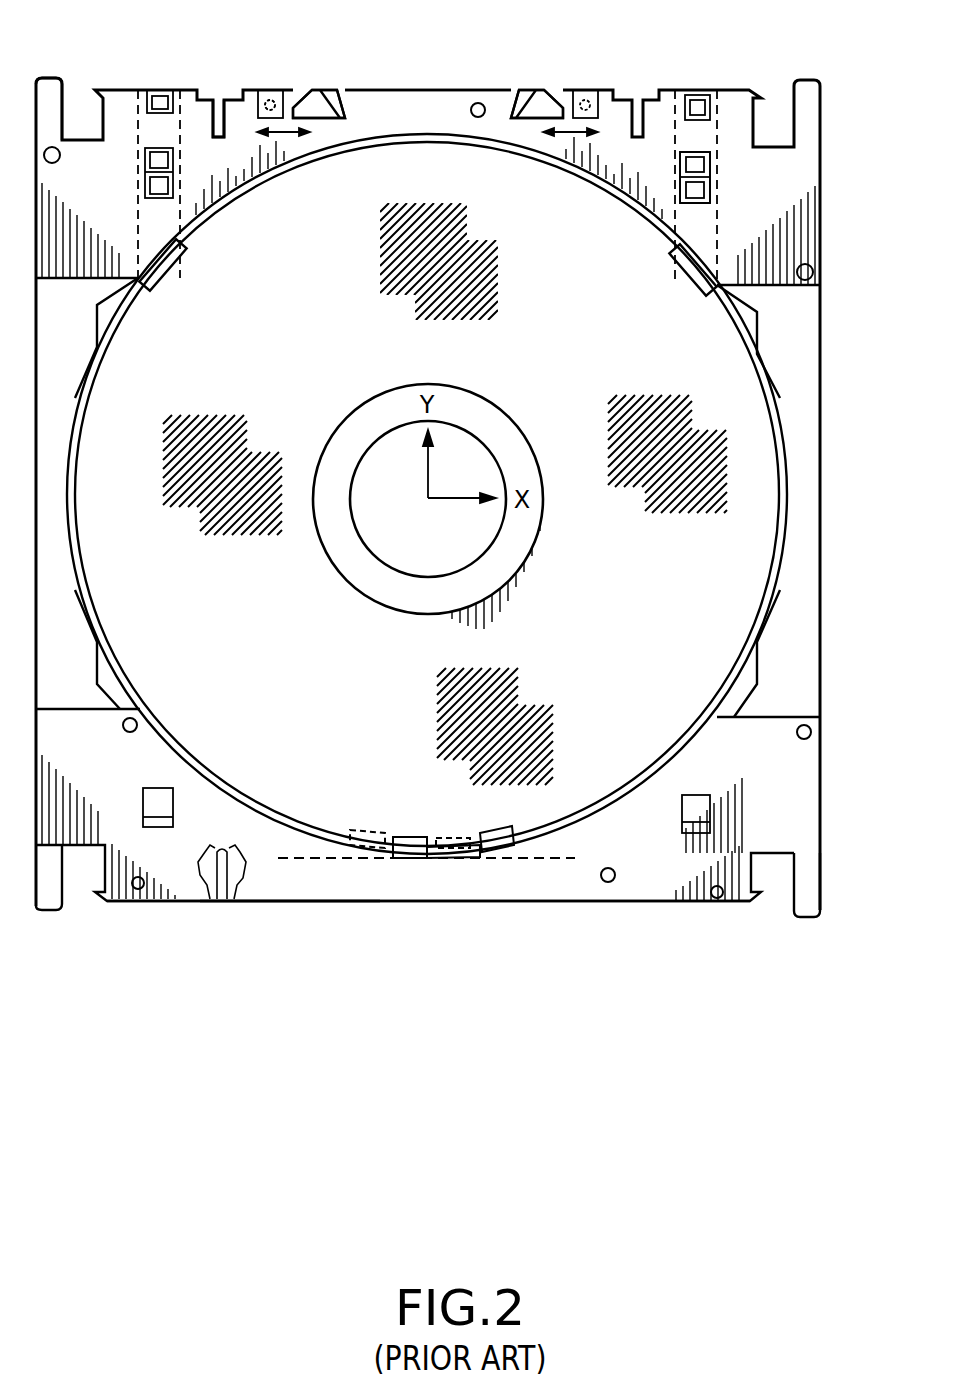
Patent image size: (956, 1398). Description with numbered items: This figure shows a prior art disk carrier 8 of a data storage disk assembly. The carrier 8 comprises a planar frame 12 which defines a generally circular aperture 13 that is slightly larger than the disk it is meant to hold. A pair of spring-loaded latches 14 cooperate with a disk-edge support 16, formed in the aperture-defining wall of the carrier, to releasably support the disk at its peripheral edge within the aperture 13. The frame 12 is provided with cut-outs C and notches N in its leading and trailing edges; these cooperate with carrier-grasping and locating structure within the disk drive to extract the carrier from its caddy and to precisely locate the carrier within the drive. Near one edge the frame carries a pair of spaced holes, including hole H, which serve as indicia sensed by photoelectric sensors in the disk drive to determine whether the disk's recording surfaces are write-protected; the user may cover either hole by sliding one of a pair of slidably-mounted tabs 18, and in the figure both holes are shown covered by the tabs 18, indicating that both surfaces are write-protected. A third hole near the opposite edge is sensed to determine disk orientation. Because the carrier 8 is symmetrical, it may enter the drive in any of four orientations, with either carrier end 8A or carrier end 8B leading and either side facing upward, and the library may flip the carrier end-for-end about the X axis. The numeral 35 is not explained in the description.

The disk carrier 8 is at (829, 476).
The carrier end 8A is at (415, 90).
The carrier end 8B is at (428, 903).
The planar frame 12 is at (290, 903).
The circular aperture 13 is at (761, 367).
The spring-loaded latches 14 is at (173, 265).
The disk-edge support 16 is at (408, 832).
The slidably-mounted tabs 18 is at (323, 92).
The detection window 35 is at (712, 192).
The cut-outs C is at (80, 95).
The notches N is at (218, 95).
The hole H is at (268, 86).